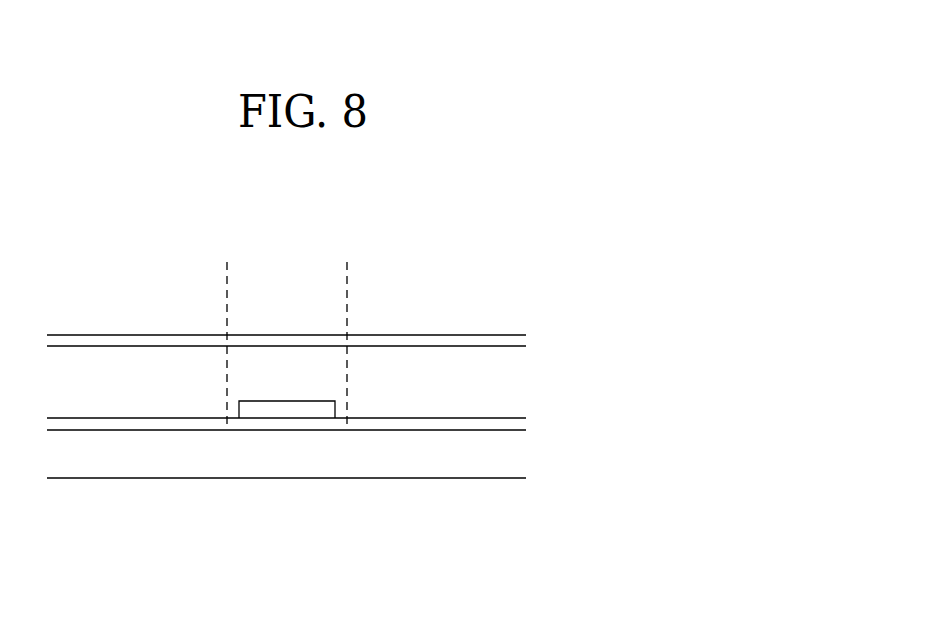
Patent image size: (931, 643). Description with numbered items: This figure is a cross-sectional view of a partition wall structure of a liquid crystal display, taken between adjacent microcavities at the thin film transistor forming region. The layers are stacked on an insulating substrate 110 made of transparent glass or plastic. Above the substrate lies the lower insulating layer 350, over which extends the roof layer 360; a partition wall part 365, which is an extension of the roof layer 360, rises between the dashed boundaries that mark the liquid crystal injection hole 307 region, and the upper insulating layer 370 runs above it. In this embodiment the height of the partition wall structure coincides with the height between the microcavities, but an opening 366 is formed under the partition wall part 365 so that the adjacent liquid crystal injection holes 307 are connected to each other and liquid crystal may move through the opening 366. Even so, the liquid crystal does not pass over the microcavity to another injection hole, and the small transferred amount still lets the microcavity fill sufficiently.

The liquid crystal injection hole 307 is at (287, 321).
The upper insulating layer 370 is at (518, 341).
The lower insulating layer 350 is at (518, 425).
The insulating substrate 110 is at (518, 461).
The partition wall part 365 is at (287, 385).
The opening 366 is at (257, 409).
The roof layer 360 is at (442, 383).